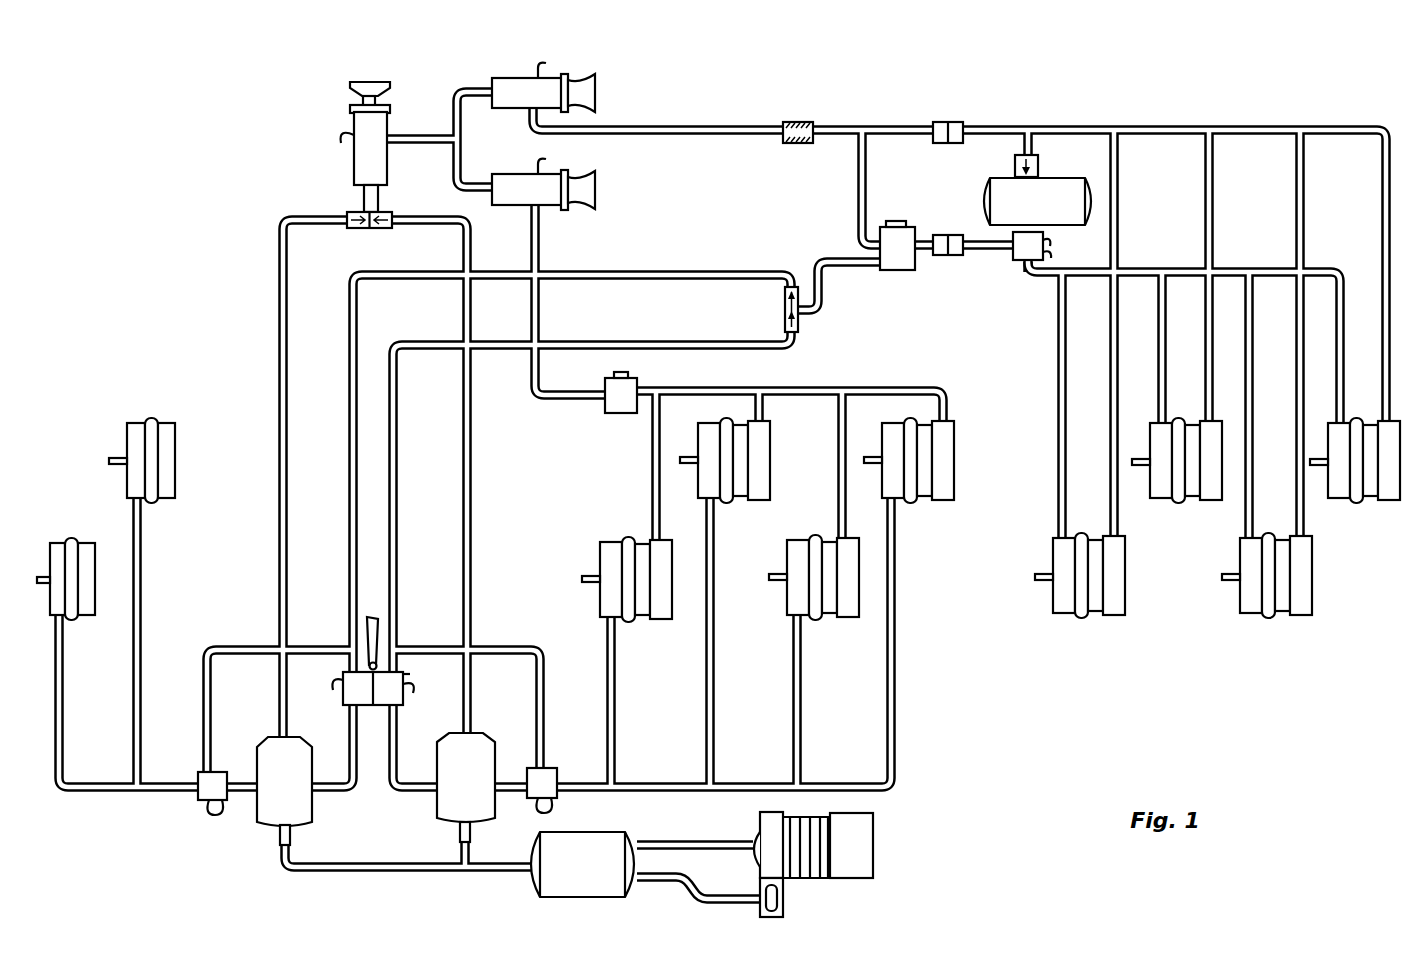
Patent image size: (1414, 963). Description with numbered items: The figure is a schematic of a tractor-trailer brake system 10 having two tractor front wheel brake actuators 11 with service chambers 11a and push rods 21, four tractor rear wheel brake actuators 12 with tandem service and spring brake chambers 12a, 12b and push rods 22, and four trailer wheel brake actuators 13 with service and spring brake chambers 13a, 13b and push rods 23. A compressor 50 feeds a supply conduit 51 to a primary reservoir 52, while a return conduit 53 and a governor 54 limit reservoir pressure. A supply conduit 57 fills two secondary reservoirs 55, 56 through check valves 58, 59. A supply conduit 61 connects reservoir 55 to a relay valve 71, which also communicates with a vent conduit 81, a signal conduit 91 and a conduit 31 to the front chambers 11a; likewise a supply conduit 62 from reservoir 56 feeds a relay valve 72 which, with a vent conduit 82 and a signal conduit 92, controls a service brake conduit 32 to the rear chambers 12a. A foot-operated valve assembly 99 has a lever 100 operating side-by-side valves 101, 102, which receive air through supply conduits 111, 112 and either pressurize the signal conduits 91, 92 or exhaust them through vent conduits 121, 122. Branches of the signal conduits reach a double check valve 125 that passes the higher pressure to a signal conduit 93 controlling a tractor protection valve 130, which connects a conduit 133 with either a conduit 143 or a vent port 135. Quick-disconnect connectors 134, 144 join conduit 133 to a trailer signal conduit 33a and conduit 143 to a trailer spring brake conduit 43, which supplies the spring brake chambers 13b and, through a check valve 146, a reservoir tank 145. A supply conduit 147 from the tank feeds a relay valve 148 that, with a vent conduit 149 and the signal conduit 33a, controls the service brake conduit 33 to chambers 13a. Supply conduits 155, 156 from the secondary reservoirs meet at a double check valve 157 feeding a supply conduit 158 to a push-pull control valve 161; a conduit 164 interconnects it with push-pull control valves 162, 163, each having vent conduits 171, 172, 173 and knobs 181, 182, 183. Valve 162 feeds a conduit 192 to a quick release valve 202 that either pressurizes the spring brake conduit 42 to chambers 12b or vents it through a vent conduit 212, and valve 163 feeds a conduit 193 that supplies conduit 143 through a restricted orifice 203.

The tractor-trailer brake system 10 is at (213, 279).
The tractor front wheel brake actuator 11 is at (123, 512).
The service chamber 11a is at (136, 423).
The tractor rear wheel brake actuator 12 is at (782, 534).
The service brake chamber 12a is at (708, 428).
The spring brake chamber 12b is at (781, 506).
The trailer wheel brake actuator 13 is at (1213, 512).
The service brake chamber 13a is at (1068, 609).
The spring brake chamber 13b is at (1111, 616).
The push rod 21 is at (118, 458).
The push rod 22 is at (684, 463).
The push rod 23 is at (1046, 584).
The conduit 31 is at (142, 587).
The service brake conduit 32 is at (618, 702).
The service brake conduit 33 is at (1143, 268).
The signal conduit 33a is at (999, 250).
The spring brake conduit 42 is at (690, 391).
The spring brake conduit 43 is at (1150, 137).
The compressor 50 is at (813, 809).
The supply conduit 51 is at (660, 842).
The primary reservoir 52 is at (567, 888).
The return conduit 53 is at (697, 877).
The governor 54 is at (783, 897).
The secondary reservoir 55 is at (303, 812).
The secondary reservoir 56 is at (486, 820).
The supply conduit 57 is at (392, 870).
The check valve 58 is at (278, 840).
The check valve 59 is at (458, 845).
The supply conduit 61 is at (240, 780).
The supply conduit 62 is at (507, 778).
The relay valve 71 is at (203, 771).
The relay valve 72 is at (548, 779).
The vent conduit 81 is at (215, 815).
The vent conduit 82 is at (548, 814).
The signal conduit 91 is at (695, 275).
The signal conduit 92 is at (705, 345).
The signal conduit 93 is at (827, 288).
The foot-operated valve assembly 99 is at (407, 669).
The foot-operated lever 100 is at (367, 617).
The valve 101 is at (358, 688).
The valve 102 is at (388, 688).
The supply conduit 111 is at (341, 790).
The supply conduit 112 is at (404, 787).
The vent conduit 121 is at (333, 690).
The vent conduit 122 is at (413, 692).
The double check valve 125 is at (783, 305).
The tractor protection valve 130 is at (892, 278).
The conduit 133 is at (918, 251).
The quick-disconnect pneumatic connector 134 is at (957, 254).
The vent port 135 is at (890, 221).
The conduit 143 is at (893, 122).
The quick-disconnect pneumatic connector 144 is at (960, 122).
The reservoir tank 145 is at (1057, 190).
The check valve 146 is at (1015, 165).
The supply conduit 147 is at (1040, 229).
The relay valve 148 is at (1012, 236).
The vent conduit 149 is at (1046, 250).
The supply conduit 155 is at (278, 357).
The supply conduit 156 is at (462, 410).
The double check valve 157 is at (375, 228).
The supply conduit 158 is at (380, 190).
The push-pull control valve 161 is at (388, 160).
The push-pull control valve 162 is at (507, 177).
The push-pull control valve 163 is at (510, 78).
The conduit 164 is at (403, 133).
The vent conduit 171 is at (340, 137).
The vent conduit 172 is at (545, 166).
The vent conduit 173 is at (545, 64).
The push-pull knob 181 is at (365, 82).
The push-pull knob 182 is at (597, 185).
The push-pull knob 183 is at (596, 82).
The conduit 192 is at (541, 250).
The conduit 193 is at (695, 130).
The quick release valve 202 is at (606, 408).
The restricted orifice 203 is at (815, 124).
The vent conduit 212 is at (614, 375).